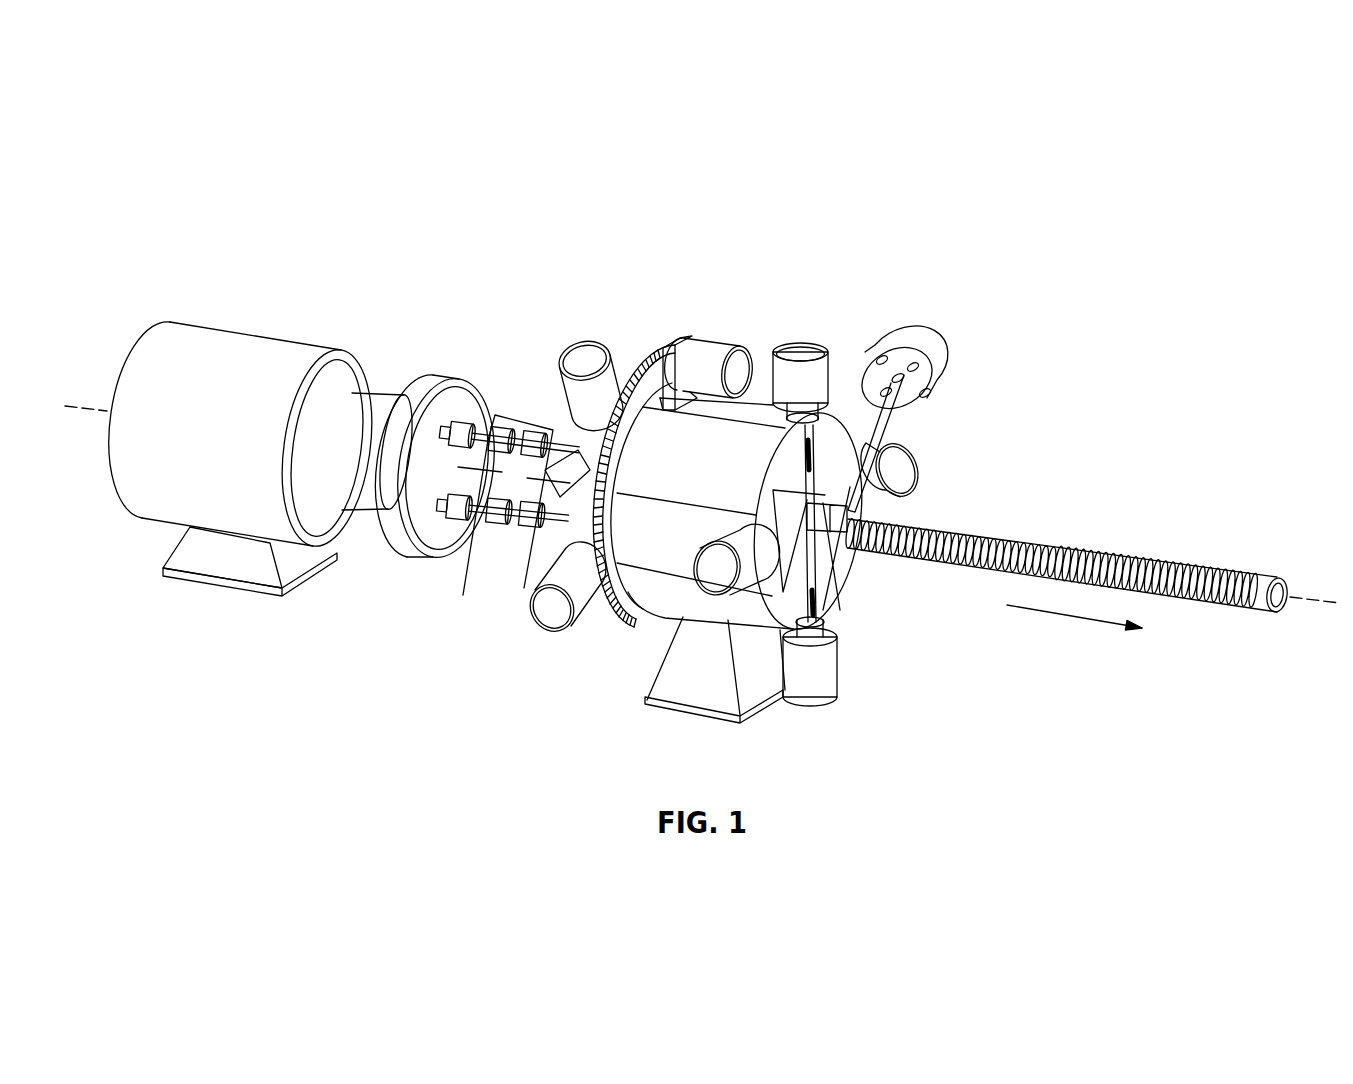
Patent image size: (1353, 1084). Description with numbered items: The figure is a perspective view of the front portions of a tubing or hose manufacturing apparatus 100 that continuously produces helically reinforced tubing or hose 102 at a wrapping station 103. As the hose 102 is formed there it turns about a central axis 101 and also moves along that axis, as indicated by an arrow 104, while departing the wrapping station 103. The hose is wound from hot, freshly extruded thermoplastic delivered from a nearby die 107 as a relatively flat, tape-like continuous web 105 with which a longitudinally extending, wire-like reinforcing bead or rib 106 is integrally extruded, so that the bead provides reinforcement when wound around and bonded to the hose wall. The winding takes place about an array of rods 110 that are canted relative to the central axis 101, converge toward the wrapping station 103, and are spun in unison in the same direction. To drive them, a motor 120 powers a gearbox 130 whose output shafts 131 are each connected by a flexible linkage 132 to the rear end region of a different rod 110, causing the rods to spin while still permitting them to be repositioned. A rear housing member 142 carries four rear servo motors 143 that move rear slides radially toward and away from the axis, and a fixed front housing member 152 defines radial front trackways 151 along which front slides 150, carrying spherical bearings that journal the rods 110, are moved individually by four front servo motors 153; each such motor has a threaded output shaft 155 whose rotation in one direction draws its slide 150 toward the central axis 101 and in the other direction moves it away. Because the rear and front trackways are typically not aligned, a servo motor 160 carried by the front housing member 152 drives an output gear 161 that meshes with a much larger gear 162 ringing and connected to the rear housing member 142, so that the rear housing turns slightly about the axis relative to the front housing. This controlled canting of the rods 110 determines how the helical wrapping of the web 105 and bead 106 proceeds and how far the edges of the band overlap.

The tubing or hose manufacturing apparatus 100 is at (845, 222).
The central axis 101 is at (80, 402).
The tubing or hose 102 is at (1107, 543).
The wrapping station 103 is at (857, 553).
The arrow 104 is at (1065, 615).
The web 105 is at (905, 400).
The reinforcing bead or rib 106 is at (893, 440).
The die 107 is at (940, 363).
The rods 110 is at (568, 432).
The motor 120 is at (230, 383).
The gearbox 130 is at (420, 403).
The output shafts 131 is at (433, 502).
The flexible linkage 132 is at (463, 595).
The rear housing member 142 is at (587, 478).
The rear servo motors 143 is at (593, 350).
The front slides 150 is at (806, 483).
The front trackways 151 is at (810, 462).
The front housing member 152 is at (708, 608).
The front servo motors 153 is at (803, 347).
The output shaft 155 is at (792, 443).
The servo motor 160 is at (707, 367).
The output gear 161 is at (648, 349).
The large gear 162 is at (620, 625).